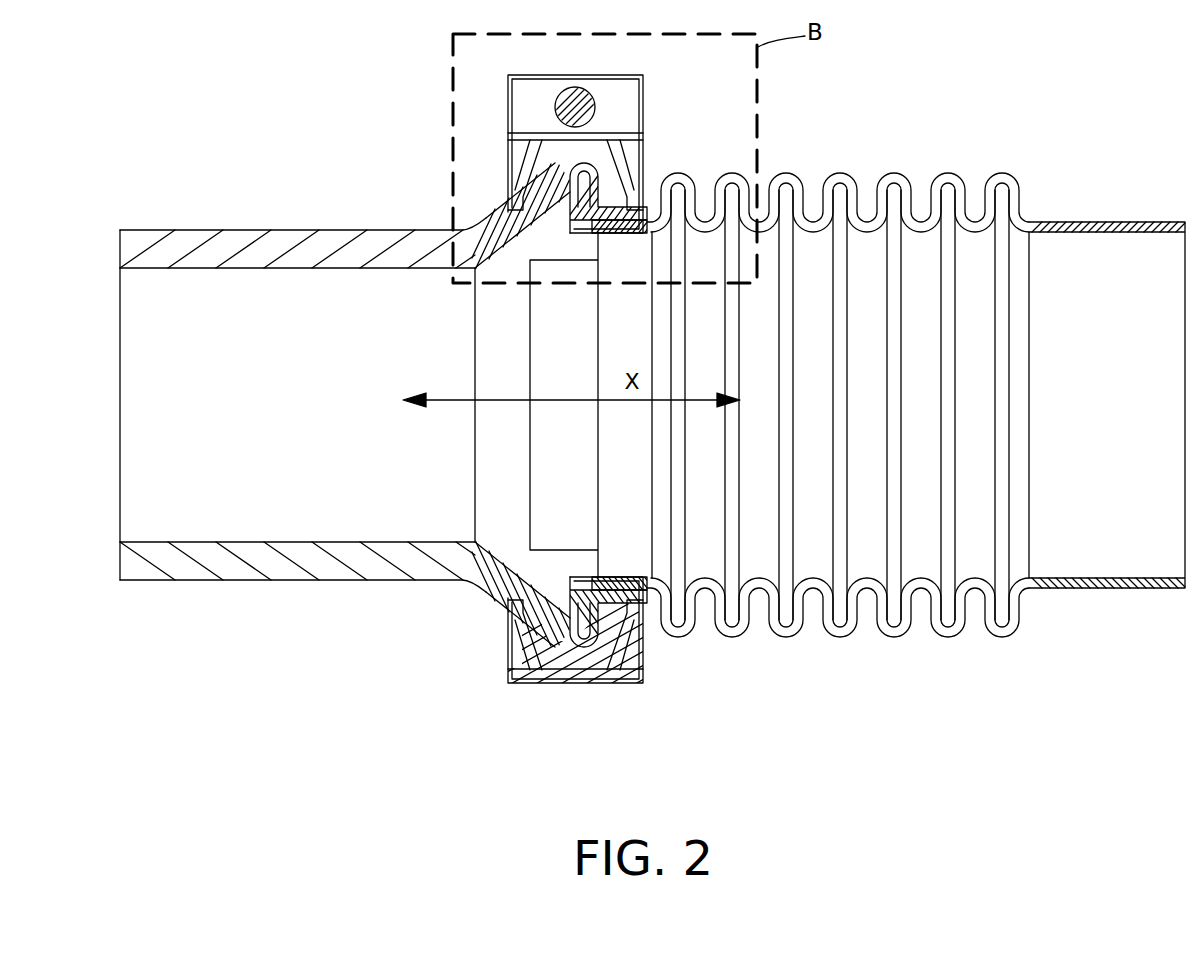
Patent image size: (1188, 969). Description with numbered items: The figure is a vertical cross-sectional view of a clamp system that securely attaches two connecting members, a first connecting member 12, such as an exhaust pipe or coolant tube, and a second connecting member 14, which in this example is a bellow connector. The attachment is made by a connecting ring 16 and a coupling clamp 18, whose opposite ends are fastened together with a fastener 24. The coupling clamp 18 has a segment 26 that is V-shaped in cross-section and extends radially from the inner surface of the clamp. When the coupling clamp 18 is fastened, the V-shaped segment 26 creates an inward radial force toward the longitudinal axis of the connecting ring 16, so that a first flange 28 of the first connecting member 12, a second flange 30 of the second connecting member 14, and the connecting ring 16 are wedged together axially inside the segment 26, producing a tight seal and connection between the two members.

The first connecting member 12 is at (185, 581).
The second connecting member 14 is at (835, 634).
The connecting ring 16 is at (637, 208).
The coupling clamp 18 is at (522, 683).
The fastener 24 is at (567, 95).
The V-shaped segment 26 is at (620, 200).
The first flange 28 is at (550, 183).
The second flange 30 is at (576, 170).